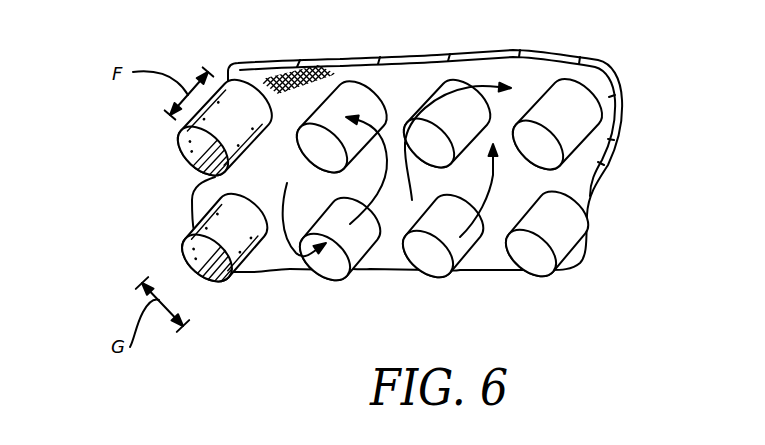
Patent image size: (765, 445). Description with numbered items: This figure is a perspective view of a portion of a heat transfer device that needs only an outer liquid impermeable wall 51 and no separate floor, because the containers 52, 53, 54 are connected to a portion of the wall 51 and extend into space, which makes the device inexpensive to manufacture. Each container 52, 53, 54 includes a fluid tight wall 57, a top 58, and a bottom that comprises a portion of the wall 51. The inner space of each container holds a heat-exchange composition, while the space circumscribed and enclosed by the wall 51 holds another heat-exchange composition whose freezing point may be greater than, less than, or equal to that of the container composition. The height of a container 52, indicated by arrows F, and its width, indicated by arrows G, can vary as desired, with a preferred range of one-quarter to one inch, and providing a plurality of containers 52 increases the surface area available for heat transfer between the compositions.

The outer liquid impermeable wall 51 is at (292, 39).
The container 52 is at (163, 141).
The container 53 is at (449, 93).
The container 54 is at (574, 111).
The fluid tight wall 57 is at (229, 130).
The top 58 is at (193, 190).